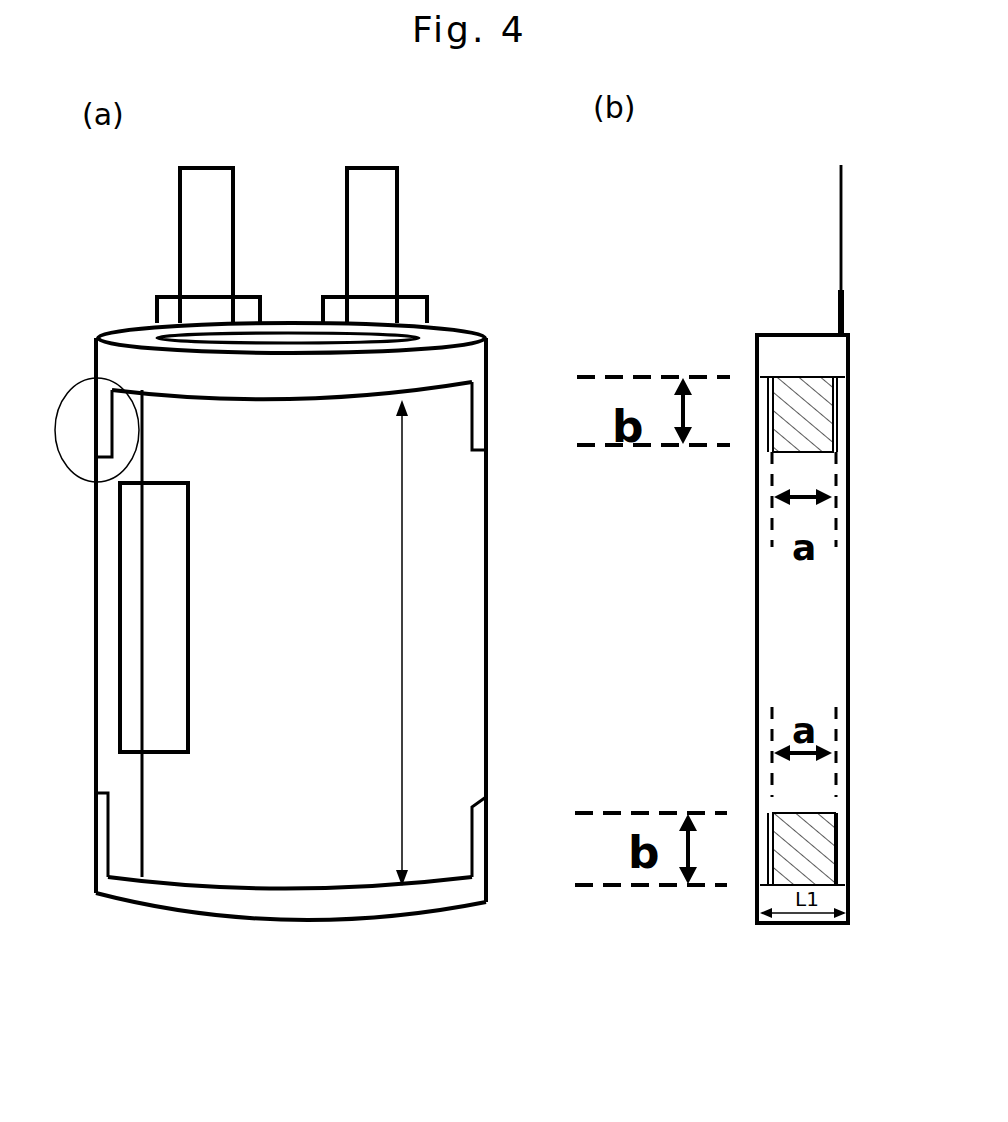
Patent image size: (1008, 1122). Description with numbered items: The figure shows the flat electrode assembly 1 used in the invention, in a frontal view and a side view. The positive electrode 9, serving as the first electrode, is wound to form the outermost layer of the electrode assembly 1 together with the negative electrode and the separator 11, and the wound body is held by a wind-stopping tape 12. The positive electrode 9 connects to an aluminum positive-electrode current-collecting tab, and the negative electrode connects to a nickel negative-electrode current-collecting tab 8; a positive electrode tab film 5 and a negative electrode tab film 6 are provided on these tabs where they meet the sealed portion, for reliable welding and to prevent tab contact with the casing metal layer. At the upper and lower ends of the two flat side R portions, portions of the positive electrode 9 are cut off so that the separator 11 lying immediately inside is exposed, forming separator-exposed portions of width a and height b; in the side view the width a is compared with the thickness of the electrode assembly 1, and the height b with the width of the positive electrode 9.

The flat electrode assembly 1 is at (95, 335).
The positive electrode tab film 5 is at (242, 310).
The negative electrode tab film 6 is at (408, 310).
The negative-electrode current-collecting tab 8 is at (383, 223).
The positive electrode 9 is at (118, 778).
The separator 11 is at (140, 903).
The wind-stopping tape 12 is at (127, 587).